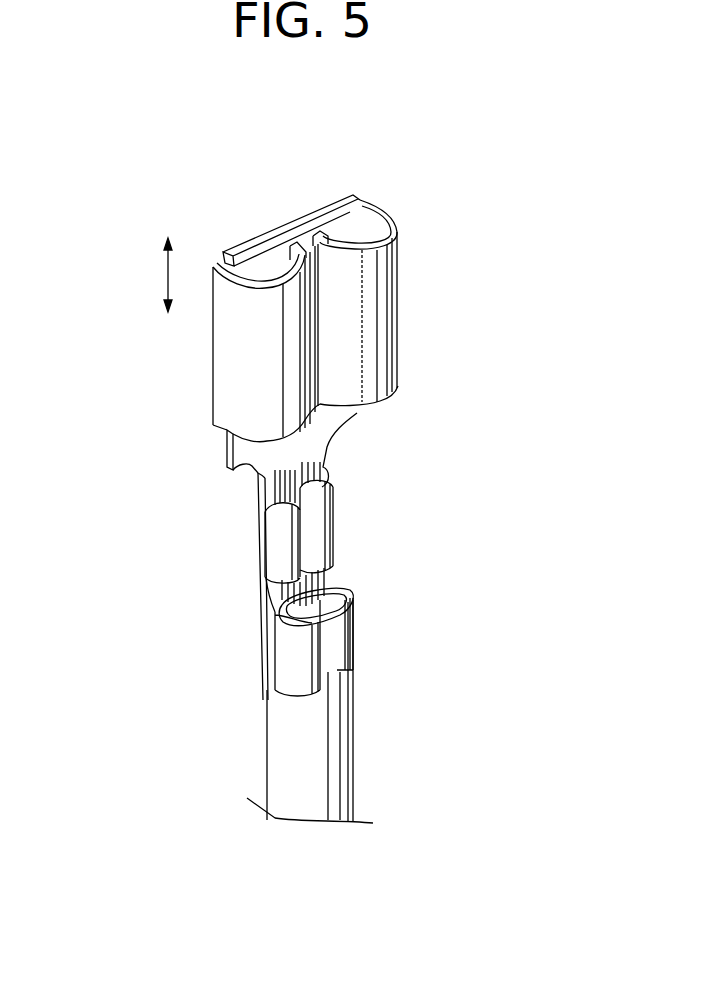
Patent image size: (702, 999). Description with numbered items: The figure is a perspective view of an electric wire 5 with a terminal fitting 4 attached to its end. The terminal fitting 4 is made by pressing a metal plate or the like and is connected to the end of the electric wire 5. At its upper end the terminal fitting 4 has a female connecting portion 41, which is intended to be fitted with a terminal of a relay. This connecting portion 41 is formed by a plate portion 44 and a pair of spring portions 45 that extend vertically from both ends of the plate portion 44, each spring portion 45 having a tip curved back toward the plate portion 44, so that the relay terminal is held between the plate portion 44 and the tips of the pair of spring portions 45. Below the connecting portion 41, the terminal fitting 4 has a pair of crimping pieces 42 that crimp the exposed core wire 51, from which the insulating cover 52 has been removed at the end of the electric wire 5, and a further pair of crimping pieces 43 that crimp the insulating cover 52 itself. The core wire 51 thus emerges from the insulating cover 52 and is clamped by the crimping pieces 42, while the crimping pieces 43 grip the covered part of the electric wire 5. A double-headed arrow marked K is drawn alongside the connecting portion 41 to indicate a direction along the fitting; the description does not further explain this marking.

The terminal fitting 4 is at (413, 293).
The female connecting portion 41 is at (192, 355).
The crimping pieces 42 is at (310, 551).
The crimping pieces 43 is at (320, 667).
The plate portion 44 is at (292, 222).
The spring portions 45 is at (297, 355).
The electric wire 5 is at (353, 763).
The core wire 51 is at (330, 560).
The insulating cover 52 is at (337, 592).
The axial direction K is at (165, 275).